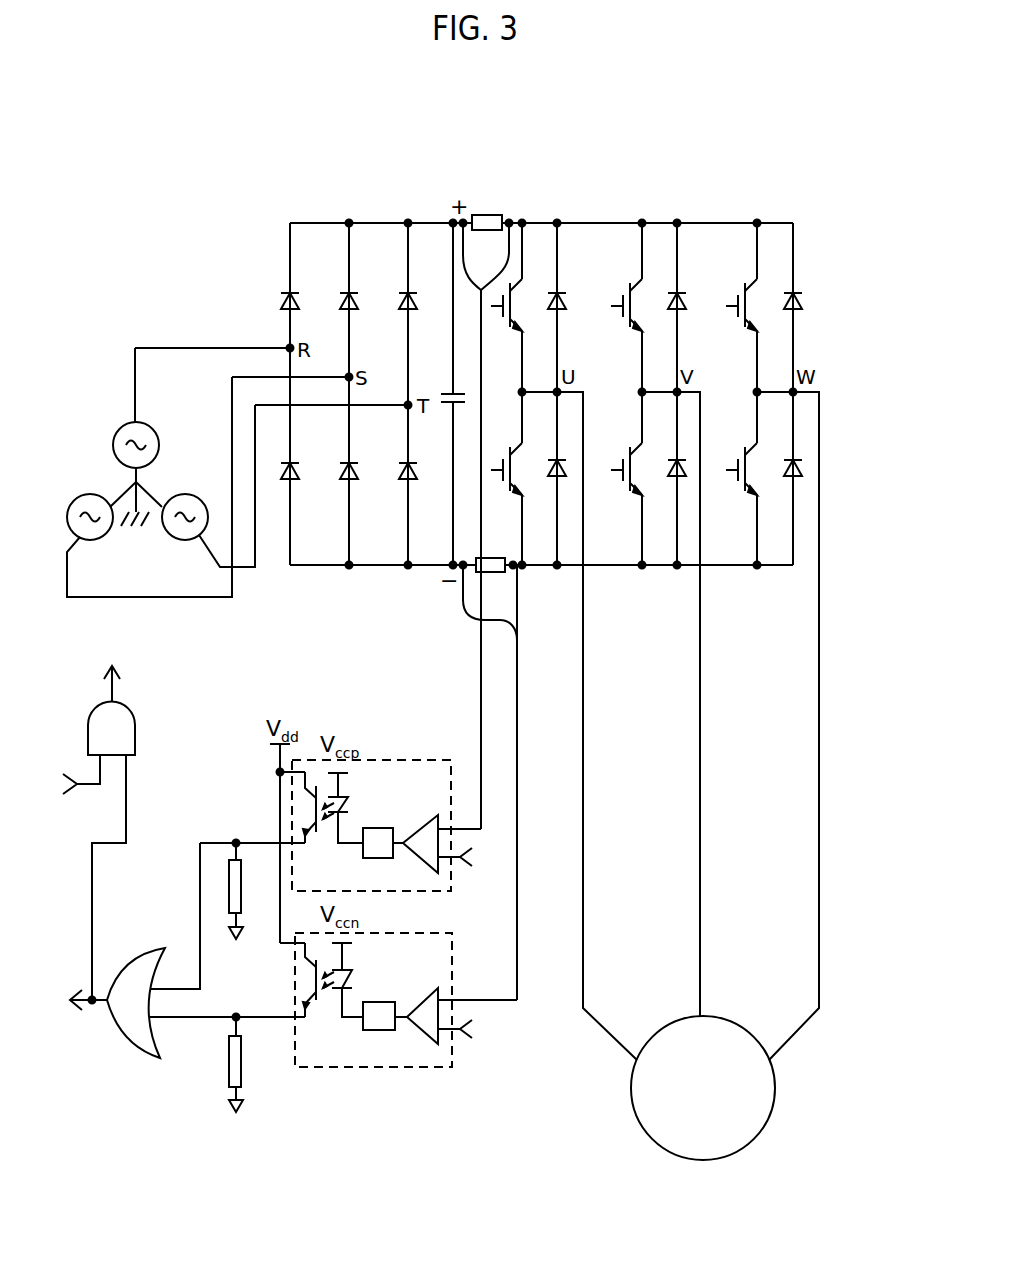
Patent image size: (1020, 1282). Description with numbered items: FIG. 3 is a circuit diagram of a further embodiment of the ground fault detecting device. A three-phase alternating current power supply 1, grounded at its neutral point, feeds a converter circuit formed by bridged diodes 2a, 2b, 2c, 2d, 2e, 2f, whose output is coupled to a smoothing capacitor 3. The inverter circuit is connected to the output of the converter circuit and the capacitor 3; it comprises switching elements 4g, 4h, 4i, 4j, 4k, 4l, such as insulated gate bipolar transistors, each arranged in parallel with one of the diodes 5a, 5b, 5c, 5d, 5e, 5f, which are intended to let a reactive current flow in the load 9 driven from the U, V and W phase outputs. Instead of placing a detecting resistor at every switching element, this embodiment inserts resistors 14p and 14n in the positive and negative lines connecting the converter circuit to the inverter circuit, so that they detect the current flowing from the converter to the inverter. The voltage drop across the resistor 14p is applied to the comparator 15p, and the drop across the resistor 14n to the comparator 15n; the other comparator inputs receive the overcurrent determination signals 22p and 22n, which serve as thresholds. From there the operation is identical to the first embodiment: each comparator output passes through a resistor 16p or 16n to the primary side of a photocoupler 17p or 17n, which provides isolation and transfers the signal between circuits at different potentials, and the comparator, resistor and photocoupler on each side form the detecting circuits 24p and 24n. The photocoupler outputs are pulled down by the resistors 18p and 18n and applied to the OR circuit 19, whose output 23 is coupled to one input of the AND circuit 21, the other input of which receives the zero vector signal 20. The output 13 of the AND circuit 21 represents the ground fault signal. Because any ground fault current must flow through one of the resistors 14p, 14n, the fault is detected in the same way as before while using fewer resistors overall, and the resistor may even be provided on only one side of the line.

The three-phase alternating current power supply 1 is at (113, 443).
The bridged diode 2a is at (286, 293).
The bridged diode 2b is at (345, 293).
The bridged diode 2c is at (404, 293).
The bridged diode 2d is at (298, 470).
The bridged diode 2e is at (357, 470).
The bridged diode 2f is at (416, 470).
The smoothing capacitor 3 is at (445, 393).
The switching element 4g is at (512, 332).
The switching element 4h is at (620, 307).
The switching element 4i is at (735, 307).
The switching element 4j is at (503, 493).
The switching element 4k is at (624, 493).
The switching element 4l is at (739, 493).
The diode 5a is at (561, 295).
The diode 5b is at (681, 295).
The diode 5c is at (797, 295).
The diode 5d is at (553, 461).
The diode 5e is at (673, 461).
The diode 5f is at (789, 461).
The load 9 is at (637, 1120).
The output of the AND circuit 13 is at (114, 670).
The resistor 14p is at (487, 214).
The resistor 14n is at (499, 574).
The comparator 15p is at (428, 822).
The comparator 15n is at (428, 995).
The resistor 16p is at (380, 828).
The resistor 16n is at (381, 1002).
The photocoupler 17p is at (327, 834).
The photocoupler 17n is at (332, 1005).
The resistor 18p is at (243, 870).
The resistor 18n is at (243, 1045).
The OR circuit 19 is at (132, 1052).
The zero vector signal 20 is at (65, 778).
The AND circuit 21 is at (137, 728).
The overcurrent determination signal 22p is at (491, 860).
The overcurrent determination signal 22n is at (491, 1032).
The overcurrent detection output signal 23 is at (74, 1003).
The circuit 24p is at (412, 760).
The circuit 24n is at (420, 936).